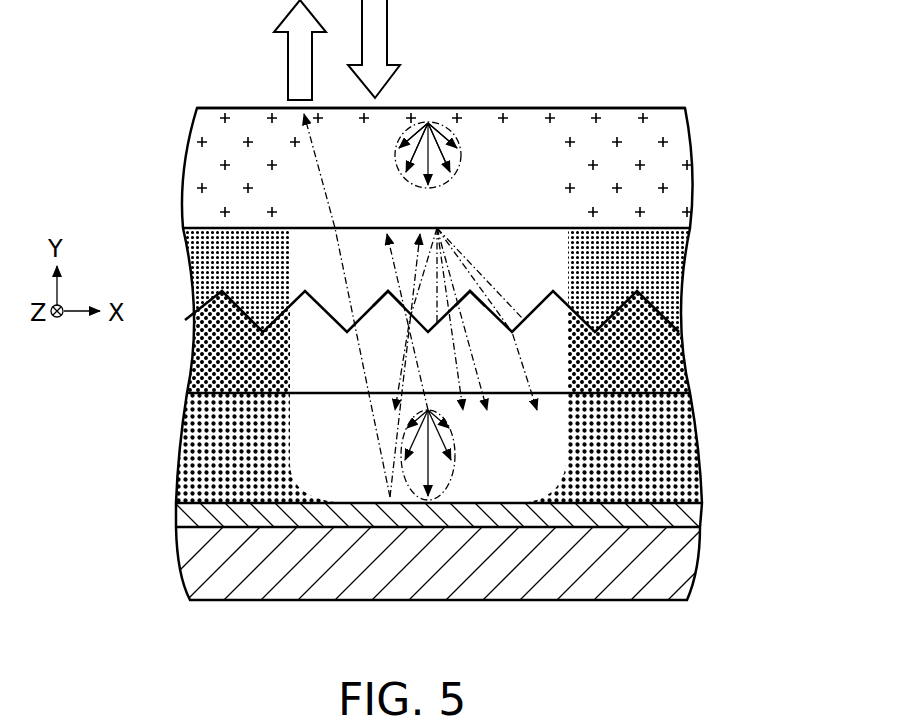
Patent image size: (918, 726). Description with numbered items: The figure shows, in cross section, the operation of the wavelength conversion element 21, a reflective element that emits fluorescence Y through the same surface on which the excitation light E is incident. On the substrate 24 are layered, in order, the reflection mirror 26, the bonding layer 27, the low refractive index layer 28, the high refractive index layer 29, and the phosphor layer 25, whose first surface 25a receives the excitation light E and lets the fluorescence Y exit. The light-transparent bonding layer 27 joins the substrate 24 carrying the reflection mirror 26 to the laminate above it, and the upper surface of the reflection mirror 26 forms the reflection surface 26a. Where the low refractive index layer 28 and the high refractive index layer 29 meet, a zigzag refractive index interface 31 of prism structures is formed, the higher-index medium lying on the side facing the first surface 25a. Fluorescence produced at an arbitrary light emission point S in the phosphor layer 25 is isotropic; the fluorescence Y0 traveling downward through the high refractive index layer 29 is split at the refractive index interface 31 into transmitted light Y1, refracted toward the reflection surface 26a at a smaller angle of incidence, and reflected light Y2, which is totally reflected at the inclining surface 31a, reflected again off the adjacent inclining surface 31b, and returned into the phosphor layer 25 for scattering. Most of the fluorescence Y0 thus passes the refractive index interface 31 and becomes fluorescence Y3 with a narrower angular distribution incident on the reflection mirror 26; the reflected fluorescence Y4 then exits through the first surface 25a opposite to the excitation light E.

The wavelength conversion element 21 is at (548, 76).
The substrate 24 is at (680, 573).
The phosphor layer 25 is at (660, 148).
The first surface 25a is at (612, 107).
The reflection mirror 26 is at (680, 517).
The reflection surface 26a is at (182, 496).
The bonding layer 27 is at (672, 445).
The low refractive index layer 28 is at (665, 357).
The high refractive index layer 29 is at (680, 263).
The refractive index interface 31 is at (360, 320).
The inclining surface 31a is at (470, 291).
The inclining surface 31b is at (393, 297).
The light emission point S is at (428, 123).
The fluorescence Y is at (295, 50).
The excitation light E is at (380, 43).
The fluorescence Y0 is at (462, 163).
The transmitted light Y1 is at (405, 345).
The reflected light Y2 is at (398, 280).
The fluorescence Y3 is at (455, 473).
The fluorescence Y4 is at (373, 437).